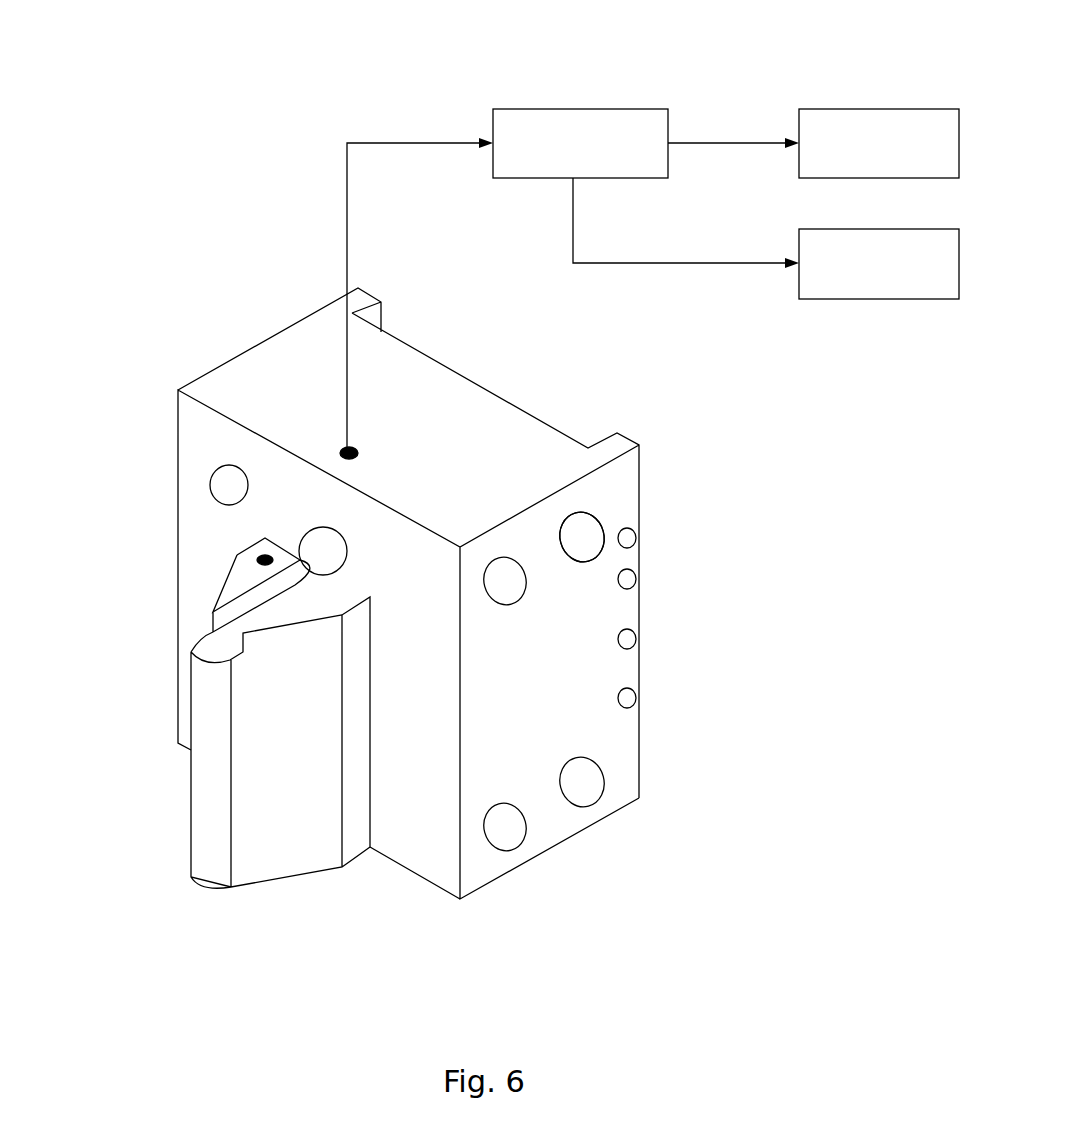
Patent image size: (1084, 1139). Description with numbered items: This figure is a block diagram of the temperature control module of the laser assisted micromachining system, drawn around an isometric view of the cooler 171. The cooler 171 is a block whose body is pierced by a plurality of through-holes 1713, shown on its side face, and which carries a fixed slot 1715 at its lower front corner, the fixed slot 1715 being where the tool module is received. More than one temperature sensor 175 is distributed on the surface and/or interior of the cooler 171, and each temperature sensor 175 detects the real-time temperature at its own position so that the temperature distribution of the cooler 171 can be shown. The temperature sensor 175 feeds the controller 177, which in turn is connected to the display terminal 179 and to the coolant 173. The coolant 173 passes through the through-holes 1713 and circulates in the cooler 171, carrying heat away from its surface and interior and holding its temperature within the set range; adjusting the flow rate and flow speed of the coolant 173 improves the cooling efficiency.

The cooler 171 is at (483, 450).
The through-holes 1713 is at (578, 542).
The fixed slot 1715 is at (215, 650).
The temperature sensor 175 is at (352, 450).
The controller 177 is at (577, 108).
The display terminal 179 is at (880, 108).
The coolant 173 is at (882, 299).